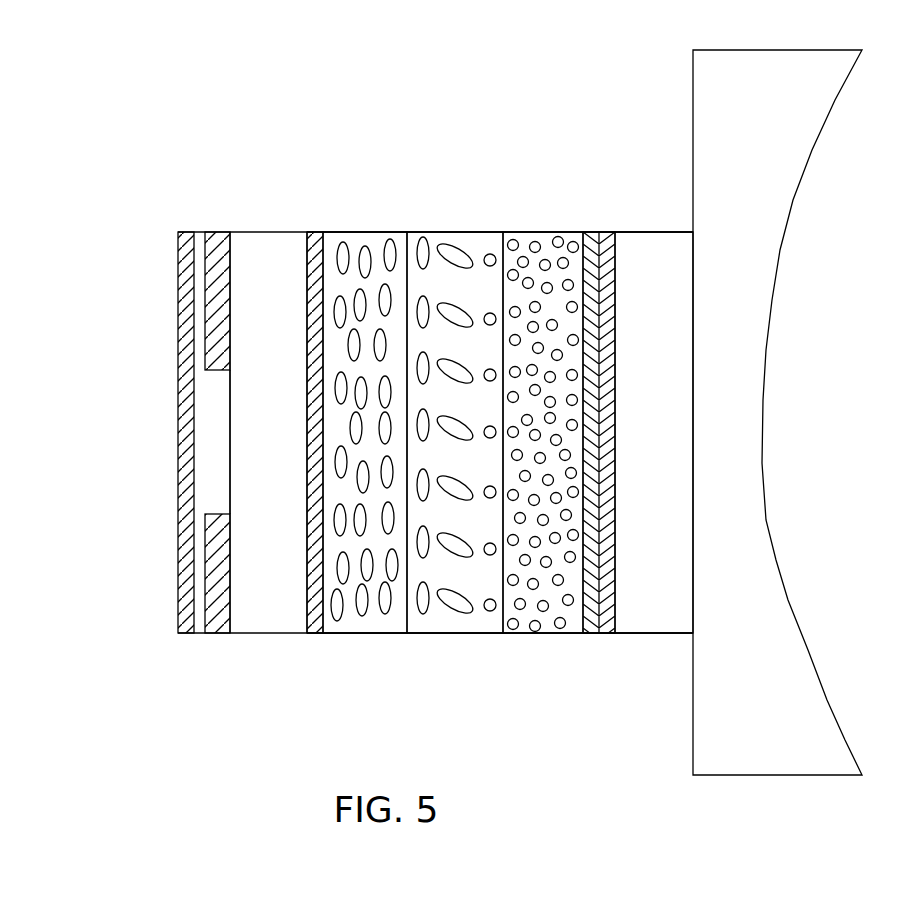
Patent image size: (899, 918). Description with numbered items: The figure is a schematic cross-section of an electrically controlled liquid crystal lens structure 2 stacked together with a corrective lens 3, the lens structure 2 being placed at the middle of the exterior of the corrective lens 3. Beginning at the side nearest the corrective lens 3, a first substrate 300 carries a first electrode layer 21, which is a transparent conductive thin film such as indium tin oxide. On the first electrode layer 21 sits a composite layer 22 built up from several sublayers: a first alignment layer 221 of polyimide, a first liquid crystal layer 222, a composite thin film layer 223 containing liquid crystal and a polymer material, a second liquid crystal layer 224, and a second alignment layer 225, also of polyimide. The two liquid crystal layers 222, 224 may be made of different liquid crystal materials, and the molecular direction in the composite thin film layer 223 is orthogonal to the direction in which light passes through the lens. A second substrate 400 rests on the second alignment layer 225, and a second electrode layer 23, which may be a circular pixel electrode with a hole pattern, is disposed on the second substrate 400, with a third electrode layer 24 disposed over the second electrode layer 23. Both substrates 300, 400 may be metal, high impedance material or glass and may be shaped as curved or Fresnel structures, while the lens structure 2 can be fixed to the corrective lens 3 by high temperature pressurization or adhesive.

The liquid crystal lens structure 2 is at (140, 213).
The corrective lens 3 is at (767, 50).
The first electrode layer 21 is at (608, 635).
The composite layer 22 is at (313, 643).
The second electrode layer 23 is at (198, 232).
The third electrode layer 24 is at (182, 635).
The first alignment layer 221 is at (591, 232).
The first liquid crystal layer 222 is at (549, 232).
The composite thin film layer 223 is at (450, 232).
The second liquid crystal layer 224 is at (366, 232).
The second alignment layer 225 is at (316, 232).
The first substrate 300 is at (667, 635).
The second substrate 400 is at (268, 635).